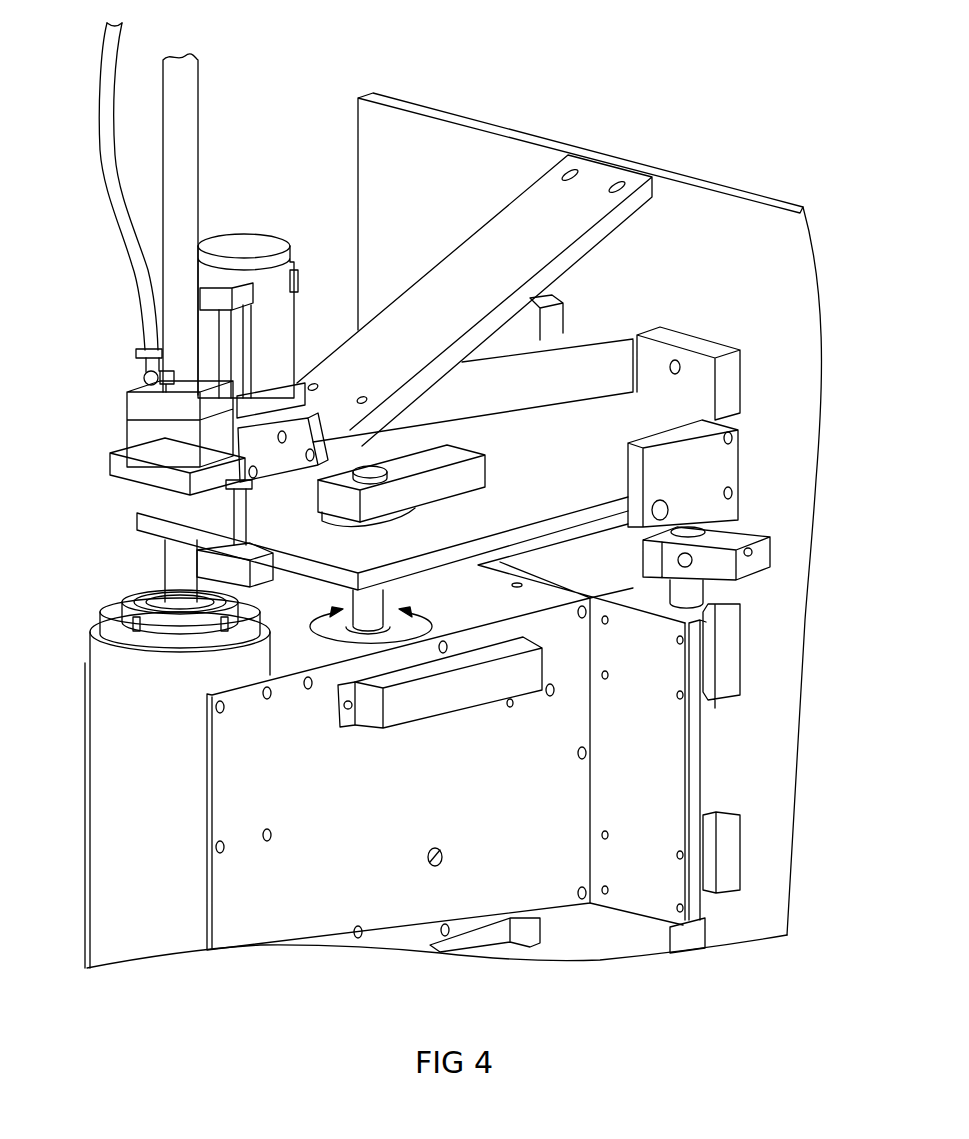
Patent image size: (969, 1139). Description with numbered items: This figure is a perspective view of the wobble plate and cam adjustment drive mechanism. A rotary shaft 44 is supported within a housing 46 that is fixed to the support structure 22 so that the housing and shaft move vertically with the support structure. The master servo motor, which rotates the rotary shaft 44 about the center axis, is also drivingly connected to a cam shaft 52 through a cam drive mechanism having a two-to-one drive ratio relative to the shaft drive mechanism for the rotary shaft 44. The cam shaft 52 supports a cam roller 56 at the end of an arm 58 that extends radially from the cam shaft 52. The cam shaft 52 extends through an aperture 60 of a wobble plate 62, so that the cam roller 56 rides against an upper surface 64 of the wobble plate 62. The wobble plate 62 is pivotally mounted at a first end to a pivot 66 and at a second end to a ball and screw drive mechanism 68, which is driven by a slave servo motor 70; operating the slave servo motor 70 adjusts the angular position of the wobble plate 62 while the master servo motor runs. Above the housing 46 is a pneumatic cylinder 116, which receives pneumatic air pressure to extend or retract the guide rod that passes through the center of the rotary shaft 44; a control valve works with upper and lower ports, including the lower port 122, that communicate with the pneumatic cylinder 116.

The support structure 22 is at (778, 206).
The rotary shaft 44 is at (167, 583).
The housing 46 is at (95, 647).
The cam shaft 52 is at (382, 602).
The cam roller 56 is at (488, 467).
The arm 58 is at (443, 483).
The aperture 60 is at (410, 515).
The wobble plate 62 is at (150, 510).
The upper surface 64 is at (368, 562).
The pivot 66 is at (662, 512).
The ball and screw drive mechanism 68 is at (185, 556).
The slave servo motor 70 is at (242, 243).
The pneumatic cylinder 116 is at (194, 78).
The lower port 122 is at (160, 376).